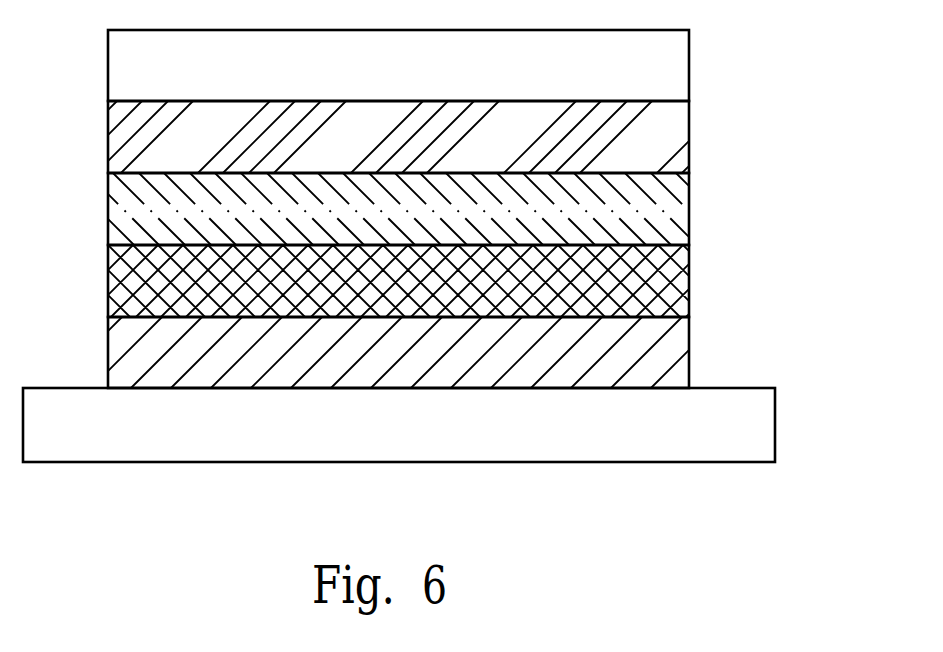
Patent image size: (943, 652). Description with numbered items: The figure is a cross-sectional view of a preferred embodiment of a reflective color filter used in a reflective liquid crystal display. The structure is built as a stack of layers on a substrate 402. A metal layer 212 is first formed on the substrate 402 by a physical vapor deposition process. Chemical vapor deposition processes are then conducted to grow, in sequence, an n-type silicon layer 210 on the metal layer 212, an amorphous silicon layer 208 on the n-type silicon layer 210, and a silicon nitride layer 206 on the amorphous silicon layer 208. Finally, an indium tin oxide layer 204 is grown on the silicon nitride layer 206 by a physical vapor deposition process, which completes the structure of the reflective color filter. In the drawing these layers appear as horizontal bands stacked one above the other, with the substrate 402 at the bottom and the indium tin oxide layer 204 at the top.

The indium tin oxide layer 204 is at (675, 64).
The silicon nitride layer 206 is at (675, 136).
The amorphous silicon layer 208 is at (675, 208).
The n-type silicon layer 210 is at (675, 279).
The metal layer 212 is at (675, 353).
The substrate 402 is at (760, 424).